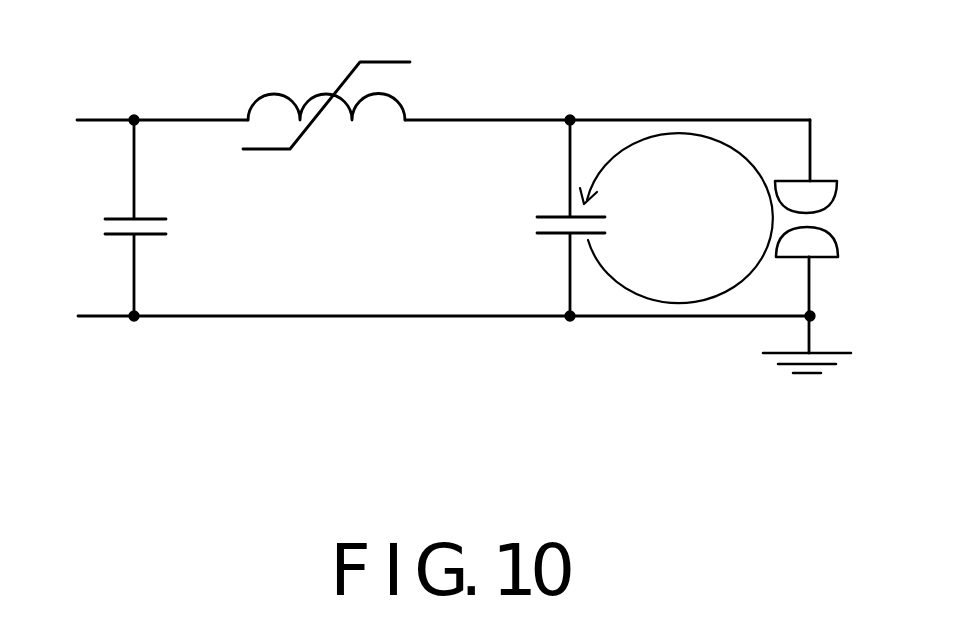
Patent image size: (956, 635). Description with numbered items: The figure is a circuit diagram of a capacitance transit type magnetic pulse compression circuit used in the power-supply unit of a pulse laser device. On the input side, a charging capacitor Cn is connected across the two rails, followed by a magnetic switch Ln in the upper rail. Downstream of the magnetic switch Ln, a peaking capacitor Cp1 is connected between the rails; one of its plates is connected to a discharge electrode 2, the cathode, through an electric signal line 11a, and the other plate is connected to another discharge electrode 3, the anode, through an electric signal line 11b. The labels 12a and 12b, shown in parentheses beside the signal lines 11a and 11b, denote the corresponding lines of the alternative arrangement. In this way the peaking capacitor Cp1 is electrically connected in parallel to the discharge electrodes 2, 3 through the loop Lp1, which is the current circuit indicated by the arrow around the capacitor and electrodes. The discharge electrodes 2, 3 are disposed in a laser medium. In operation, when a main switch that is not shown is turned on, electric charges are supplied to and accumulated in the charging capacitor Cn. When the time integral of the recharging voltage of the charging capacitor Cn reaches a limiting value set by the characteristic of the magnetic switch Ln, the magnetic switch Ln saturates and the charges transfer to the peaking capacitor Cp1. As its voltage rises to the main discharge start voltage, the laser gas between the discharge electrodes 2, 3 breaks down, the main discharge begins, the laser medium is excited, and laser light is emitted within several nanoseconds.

The discharge electrode 2 is at (838, 186).
The discharge electrode 3 is at (836, 240).
The electric signal line 11a is at (591, 62).
The terminal 12a is at (570, 120).
The electric signal line 11b is at (610, 378).
The terminal 12b is at (588, 318).
The charging capacitor Cn is at (97, 213).
The magnetic switch Ln is at (275, 90).
The peaking capacitor Cp1 is at (603, 208).
The loop Lp1 is at (733, 145).